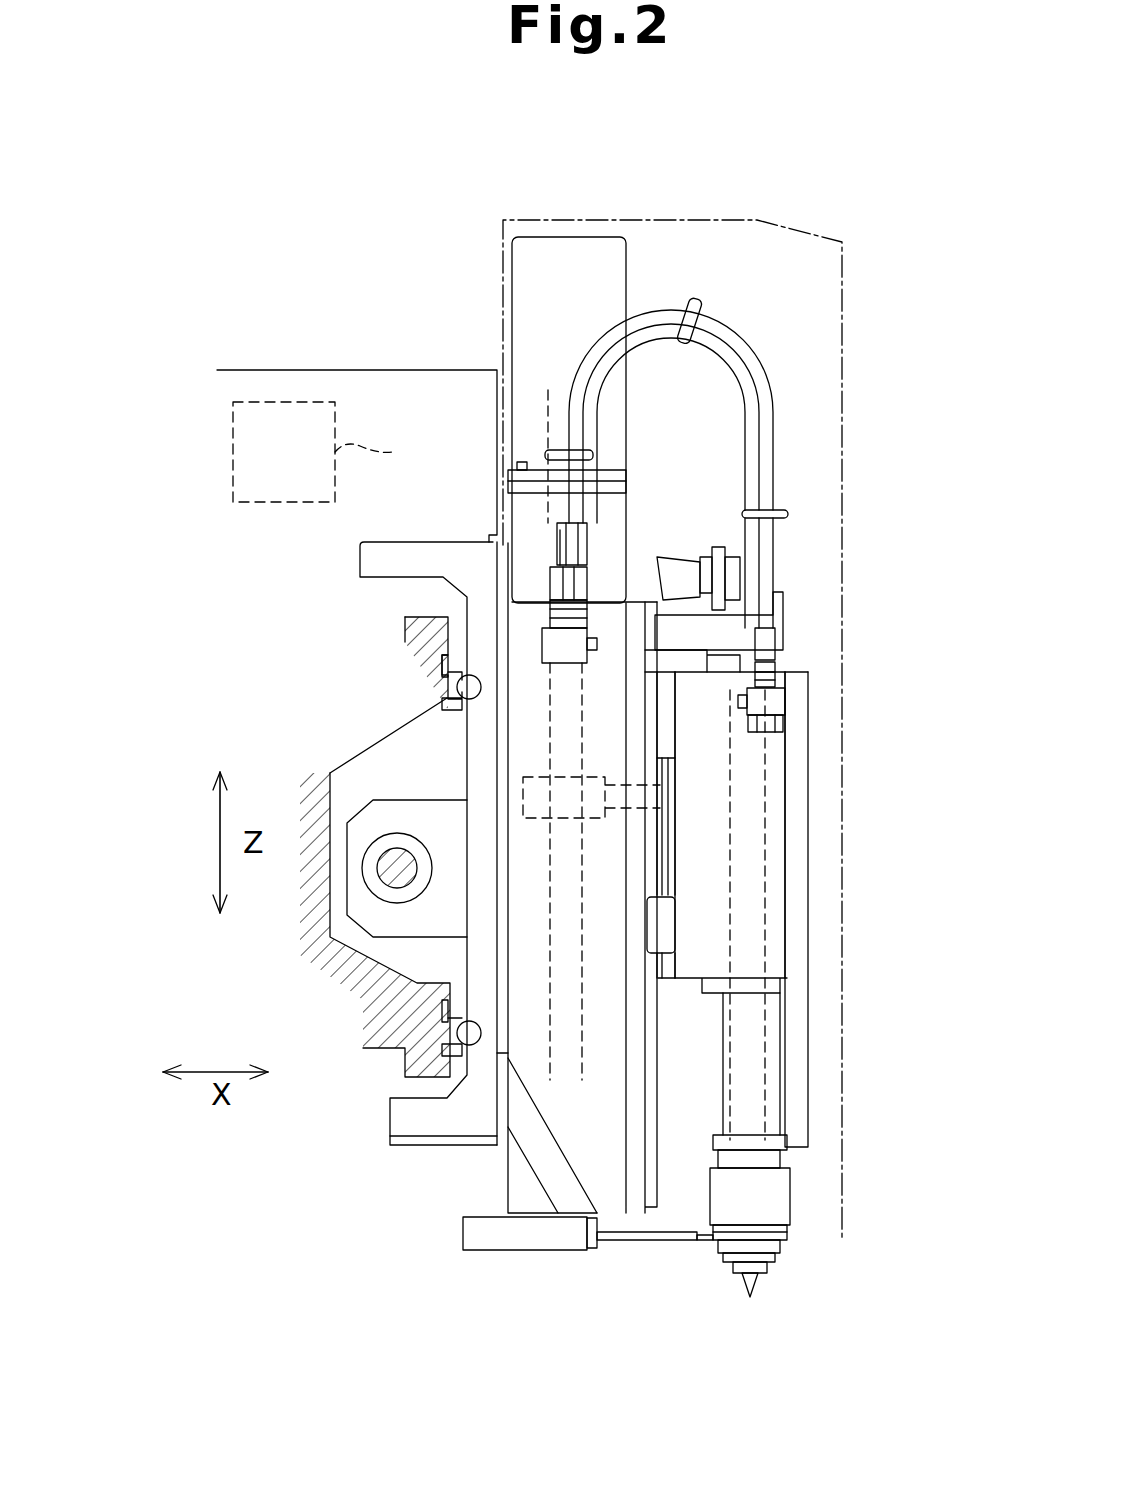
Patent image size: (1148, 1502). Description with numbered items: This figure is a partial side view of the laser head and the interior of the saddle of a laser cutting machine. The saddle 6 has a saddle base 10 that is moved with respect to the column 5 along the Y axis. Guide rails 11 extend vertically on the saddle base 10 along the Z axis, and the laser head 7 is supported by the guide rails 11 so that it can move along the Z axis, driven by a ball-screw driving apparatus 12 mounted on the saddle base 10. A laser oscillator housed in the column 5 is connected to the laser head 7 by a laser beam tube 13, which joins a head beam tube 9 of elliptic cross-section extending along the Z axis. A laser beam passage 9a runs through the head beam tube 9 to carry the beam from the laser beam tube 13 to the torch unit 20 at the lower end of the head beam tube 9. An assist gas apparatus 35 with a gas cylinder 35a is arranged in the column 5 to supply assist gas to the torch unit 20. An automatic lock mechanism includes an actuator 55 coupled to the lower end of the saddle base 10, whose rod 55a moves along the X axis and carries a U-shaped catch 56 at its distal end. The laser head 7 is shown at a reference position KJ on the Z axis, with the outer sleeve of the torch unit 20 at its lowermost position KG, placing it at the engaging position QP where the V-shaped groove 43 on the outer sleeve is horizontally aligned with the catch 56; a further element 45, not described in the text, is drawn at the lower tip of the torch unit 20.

The column 5 is at (340, 358).
The saddle 6 is at (820, 212).
The laser head 7 is at (818, 760).
The head beam tube 9 is at (790, 1020).
The laser beam passage 9a is at (755, 878).
The saddle base 10 is at (495, 1160).
The guide rails 11 is at (660, 1031).
The driving apparatus 12 is at (538, 745).
The laser beam tube 13 is at (698, 550).
The torch unit 20 is at (800, 1190).
The assist gas apparatus 35 is at (230, 428).
The gas cylinder 35a is at (398, 452).
The groove 43 is at (785, 1240).
The nozzle tip 45 is at (757, 1282).
The actuator 55 is at (498, 1250).
The rod 55a is at (625, 1240).
The catch 56 is at (700, 1240).
The reference position KJ is at (818, 823).
The lowermost position KG is at (800, 1233).
The engaging position QP is at (705, 1200).